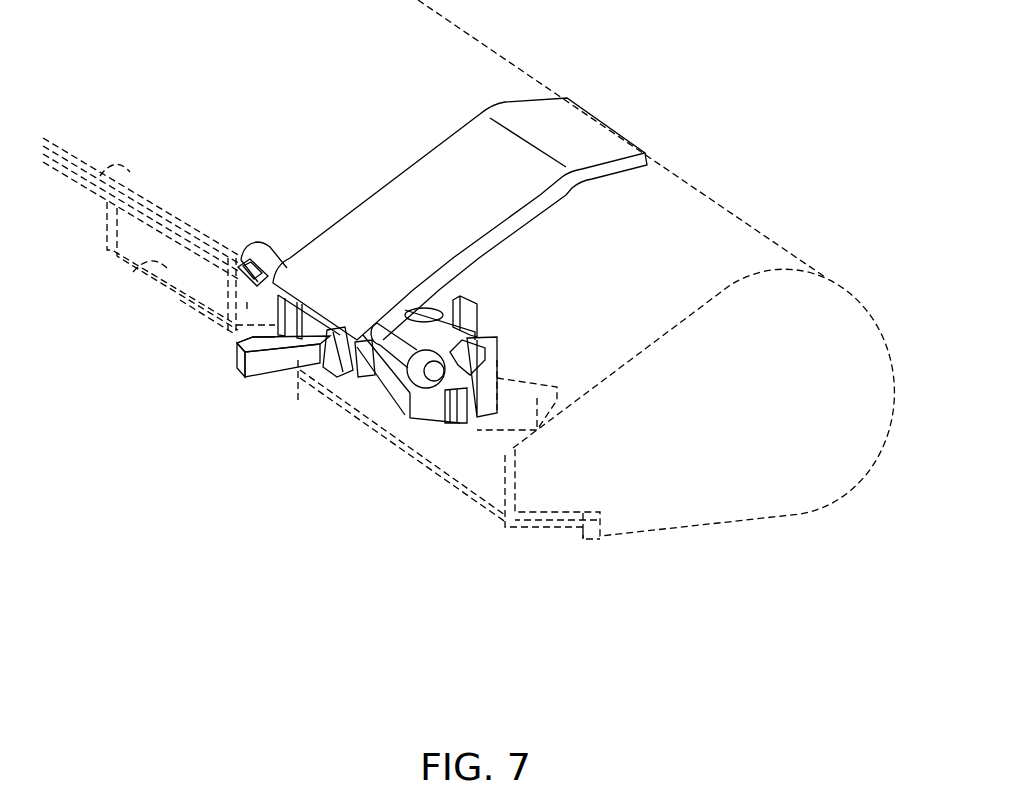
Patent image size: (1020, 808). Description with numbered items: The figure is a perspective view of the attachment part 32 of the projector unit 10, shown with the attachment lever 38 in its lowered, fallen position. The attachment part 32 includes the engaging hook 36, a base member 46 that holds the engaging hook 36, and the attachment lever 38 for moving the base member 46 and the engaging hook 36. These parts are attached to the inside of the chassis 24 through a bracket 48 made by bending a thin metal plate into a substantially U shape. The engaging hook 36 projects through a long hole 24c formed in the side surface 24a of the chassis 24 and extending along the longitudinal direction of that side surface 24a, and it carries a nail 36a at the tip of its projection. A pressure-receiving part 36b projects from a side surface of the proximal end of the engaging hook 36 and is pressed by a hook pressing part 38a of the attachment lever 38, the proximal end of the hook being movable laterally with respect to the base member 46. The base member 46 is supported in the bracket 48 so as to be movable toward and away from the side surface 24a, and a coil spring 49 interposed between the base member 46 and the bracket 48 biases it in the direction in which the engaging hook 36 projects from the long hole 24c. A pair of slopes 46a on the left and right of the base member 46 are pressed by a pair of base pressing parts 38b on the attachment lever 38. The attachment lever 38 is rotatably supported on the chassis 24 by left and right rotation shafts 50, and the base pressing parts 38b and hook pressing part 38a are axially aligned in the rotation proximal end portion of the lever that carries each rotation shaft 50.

The projector unit 10 is at (718, 506).
The chassis 24 is at (92, 184).
The side surface 24a is at (140, 271).
The long hole 24c is at (300, 375).
The attachment part 32 is at (318, 466).
The engaging hook 36 is at (267, 378).
The nail 36a is at (237, 343).
The pressure-receiving part 36b is at (343, 366).
The attachment lever 38 is at (405, 185).
The hook pressing part 38a is at (358, 380).
The base pressing part 38b is at (450, 390).
The base member 46 is at (472, 332).
The slope 46a is at (490, 372).
The bracket 48 is at (213, 312).
The coil spring 49 is at (470, 305).
The rotation shaft 50 is at (255, 245).